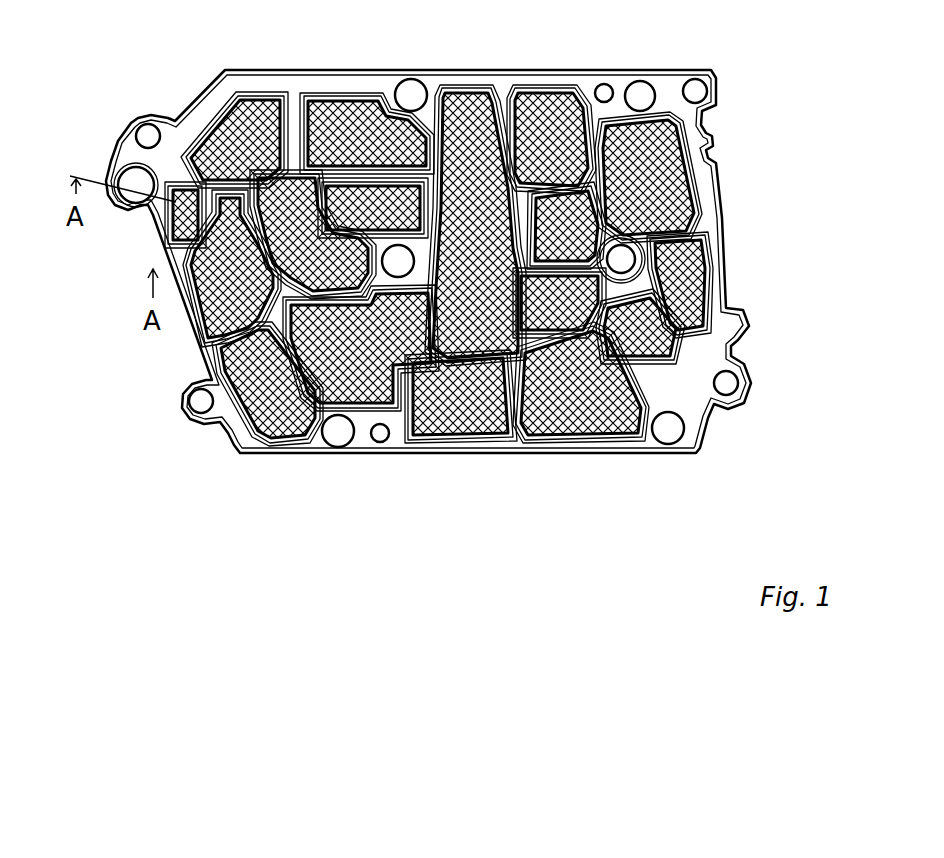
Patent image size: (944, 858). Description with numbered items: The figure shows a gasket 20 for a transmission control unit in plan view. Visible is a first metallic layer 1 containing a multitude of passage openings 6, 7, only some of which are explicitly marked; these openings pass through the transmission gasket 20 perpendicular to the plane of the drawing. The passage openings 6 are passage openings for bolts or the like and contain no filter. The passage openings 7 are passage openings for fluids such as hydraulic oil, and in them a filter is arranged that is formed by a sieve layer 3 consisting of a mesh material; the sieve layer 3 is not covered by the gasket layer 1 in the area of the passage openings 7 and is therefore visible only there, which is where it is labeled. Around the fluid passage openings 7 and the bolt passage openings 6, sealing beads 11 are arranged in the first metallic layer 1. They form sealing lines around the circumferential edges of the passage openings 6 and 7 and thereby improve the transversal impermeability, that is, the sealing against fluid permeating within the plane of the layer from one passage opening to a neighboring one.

The first metallic layer 1 is at (707, 141).
The sieve layer 3 is at (677, 268).
The passage openings for bolts 6 is at (403, 73).
The passage openings for fluids 7 is at (232, 105).
The sealing beads 11 is at (523, 80).
The gasket for a transmission control unit 20 is at (668, 65).